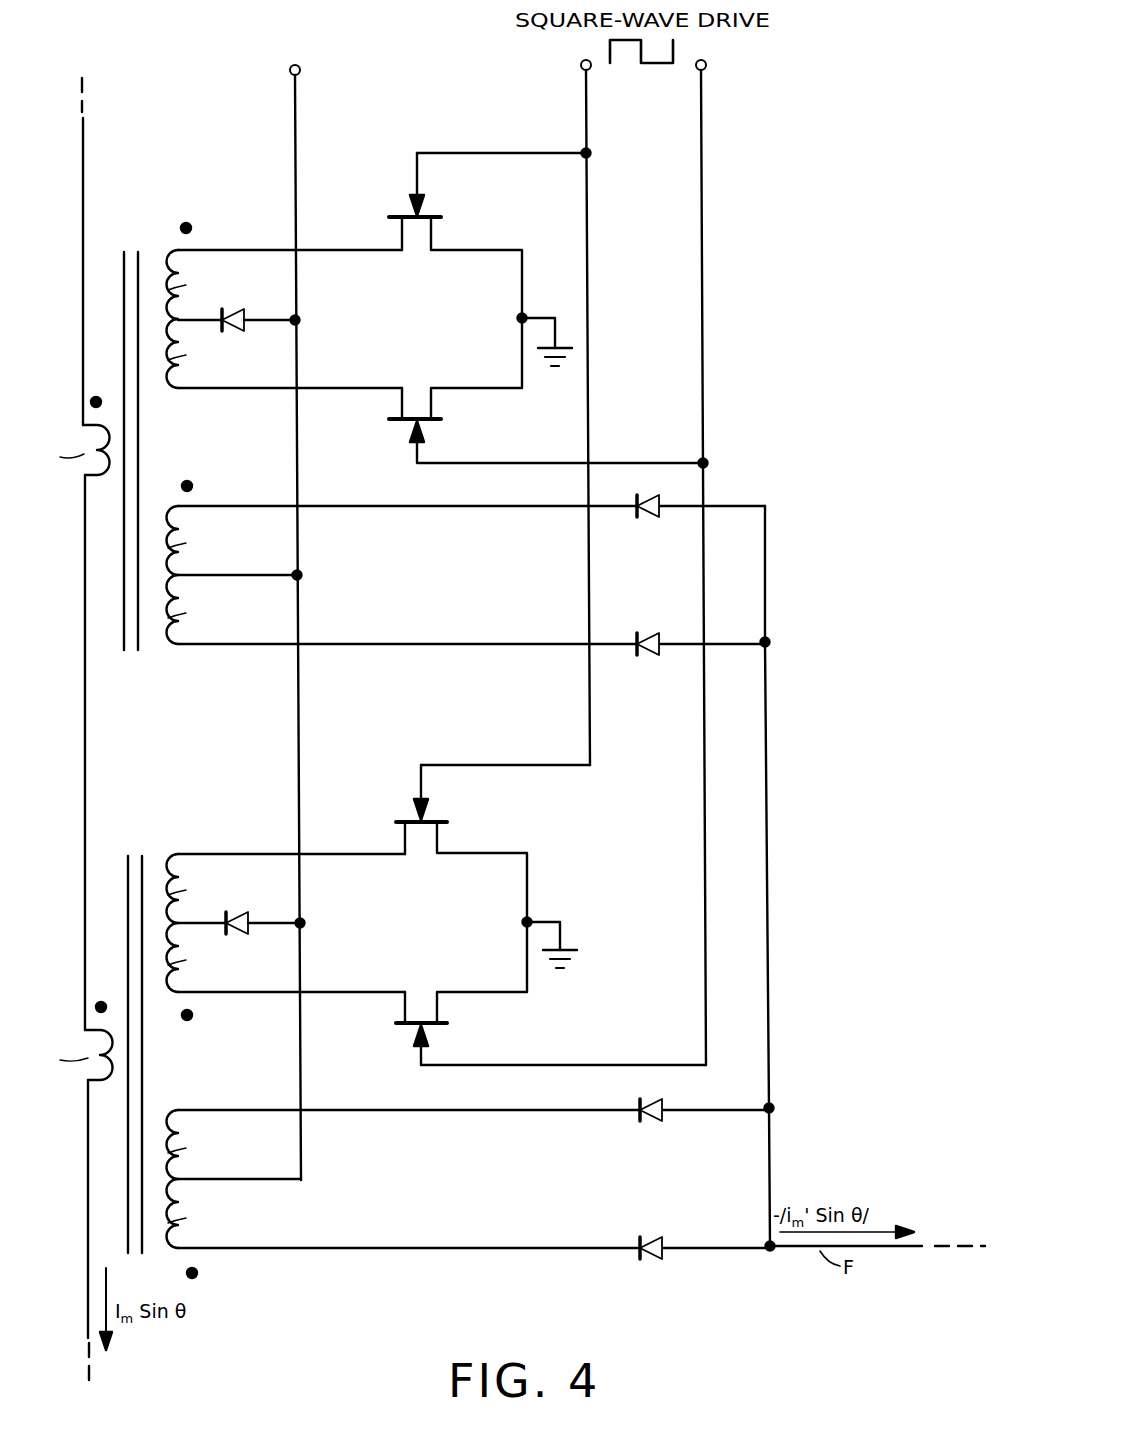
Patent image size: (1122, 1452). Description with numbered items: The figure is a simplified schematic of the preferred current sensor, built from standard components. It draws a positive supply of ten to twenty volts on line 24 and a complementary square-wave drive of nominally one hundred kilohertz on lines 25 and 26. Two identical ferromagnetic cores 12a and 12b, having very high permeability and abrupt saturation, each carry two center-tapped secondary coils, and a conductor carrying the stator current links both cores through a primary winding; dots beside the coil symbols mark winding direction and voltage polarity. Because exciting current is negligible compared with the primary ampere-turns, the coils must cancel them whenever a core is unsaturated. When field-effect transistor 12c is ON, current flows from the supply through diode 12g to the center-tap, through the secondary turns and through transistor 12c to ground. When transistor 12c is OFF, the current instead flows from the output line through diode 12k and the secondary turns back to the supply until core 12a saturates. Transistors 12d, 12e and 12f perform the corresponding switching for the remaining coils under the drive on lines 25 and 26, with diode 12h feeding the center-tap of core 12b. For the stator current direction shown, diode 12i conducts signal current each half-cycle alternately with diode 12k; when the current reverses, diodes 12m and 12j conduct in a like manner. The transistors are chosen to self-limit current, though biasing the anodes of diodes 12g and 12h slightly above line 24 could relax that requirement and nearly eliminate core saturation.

The supply line 24 is at (292, 125).
The square-wave drive line 25 is at (589, 112).
The square-wave drive line 26 is at (705, 112).
The ferromagnetic core 12a is at (140, 652).
The ferromagnetic core 12b is at (137, 850).
The field-effect transistor 12c is at (421, 212).
The field-effect transistor 12d is at (423, 426).
The field-effect transistor 12e is at (428, 817).
The field-effect transistor 12f is at (428, 1034).
The diode 12g is at (236, 328).
The diode 12h is at (240, 932).
The diode 12i is at (652, 1118).
The diode 12j is at (654, 1256).
The diode 12k is at (648, 654).
The diode 12m is at (648, 516).